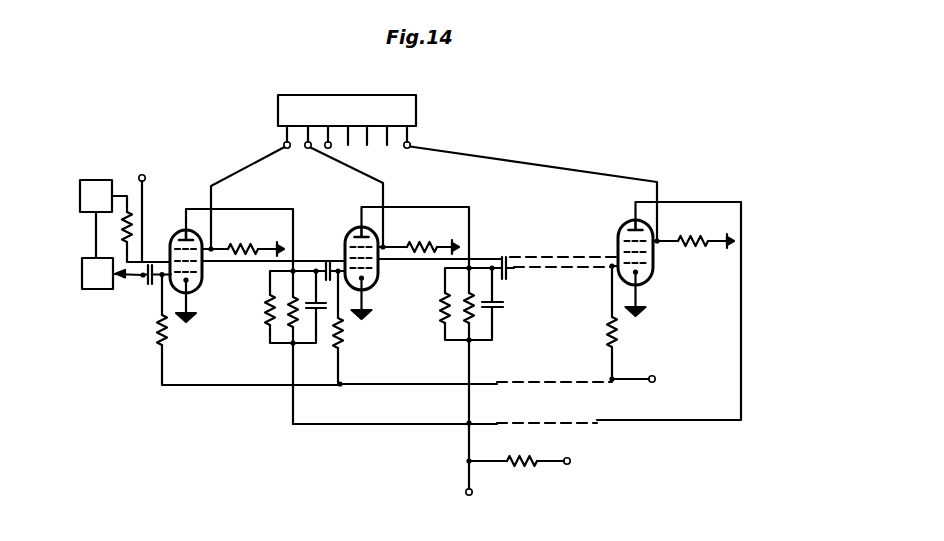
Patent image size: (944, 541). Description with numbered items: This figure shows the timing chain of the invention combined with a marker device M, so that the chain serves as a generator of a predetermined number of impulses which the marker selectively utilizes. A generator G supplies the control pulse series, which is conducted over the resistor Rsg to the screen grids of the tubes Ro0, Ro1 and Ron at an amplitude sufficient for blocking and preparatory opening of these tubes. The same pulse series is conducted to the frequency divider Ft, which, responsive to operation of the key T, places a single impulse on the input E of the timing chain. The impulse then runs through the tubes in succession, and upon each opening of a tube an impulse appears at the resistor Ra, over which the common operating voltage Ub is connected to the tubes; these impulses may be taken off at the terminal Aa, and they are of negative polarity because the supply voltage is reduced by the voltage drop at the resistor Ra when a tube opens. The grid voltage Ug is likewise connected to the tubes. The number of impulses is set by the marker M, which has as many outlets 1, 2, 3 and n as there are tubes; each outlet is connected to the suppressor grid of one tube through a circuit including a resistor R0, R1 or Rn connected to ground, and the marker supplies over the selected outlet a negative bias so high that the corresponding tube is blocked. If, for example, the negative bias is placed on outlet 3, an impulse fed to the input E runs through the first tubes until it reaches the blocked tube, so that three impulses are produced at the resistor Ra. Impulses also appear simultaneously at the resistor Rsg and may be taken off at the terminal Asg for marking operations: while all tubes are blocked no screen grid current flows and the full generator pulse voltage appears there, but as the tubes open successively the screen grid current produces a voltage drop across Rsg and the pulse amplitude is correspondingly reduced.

The marker device M is at (388, 84).
The marker outlet 1 is at (285, 153).
The marker outlet 2 is at (306, 154).
The marker outlet 3 is at (332, 152).
The marker outlet n is at (405, 153).
The generator G is at (109, 167).
The frequency divider Ft is at (88, 297).
The screen grid resistor Rsg is at (121, 229).
The screen grid terminal Asg is at (145, 209).
The key T is at (128, 284).
The input of the timing chain E is at (157, 282).
The first tube Ro0 is at (174, 276).
The suppressor grid resistor R0 is at (243, 242).
The second tube Ro1 is at (348, 273).
The suppressor grid resistor R1 is at (418, 240).
The n-th tube Ron is at (622, 268).
The suppressor grid resistor Rn is at (693, 234).
The grid voltage Ug is at (650, 380).
The anode resistor Ra is at (516, 453).
The common operating voltage Ub is at (583, 463).
The output terminal Aa is at (474, 488).